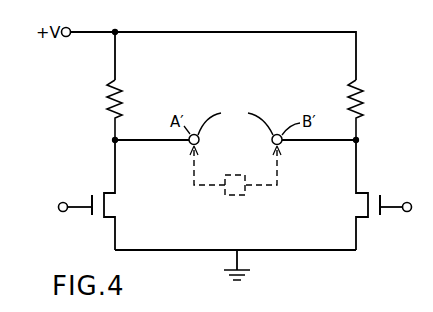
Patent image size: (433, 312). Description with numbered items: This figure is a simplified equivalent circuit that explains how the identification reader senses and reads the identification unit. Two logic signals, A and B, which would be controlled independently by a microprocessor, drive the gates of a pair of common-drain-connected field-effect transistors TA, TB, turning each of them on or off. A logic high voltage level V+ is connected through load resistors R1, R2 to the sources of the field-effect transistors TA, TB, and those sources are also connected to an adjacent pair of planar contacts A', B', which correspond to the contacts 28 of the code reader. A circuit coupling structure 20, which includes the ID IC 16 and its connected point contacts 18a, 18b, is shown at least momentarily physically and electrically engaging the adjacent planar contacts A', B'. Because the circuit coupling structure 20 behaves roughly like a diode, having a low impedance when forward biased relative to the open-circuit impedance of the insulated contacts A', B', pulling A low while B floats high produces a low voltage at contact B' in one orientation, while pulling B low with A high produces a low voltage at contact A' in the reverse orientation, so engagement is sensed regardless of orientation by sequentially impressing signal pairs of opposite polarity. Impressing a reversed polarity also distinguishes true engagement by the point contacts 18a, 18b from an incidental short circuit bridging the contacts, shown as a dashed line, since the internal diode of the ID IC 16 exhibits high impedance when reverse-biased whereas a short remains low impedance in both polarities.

The ID IC 16 is at (240, 197).
The point contact 18a is at (190, 151).
The point contact 18b is at (282, 151).
The circuit coupling structure 20 is at (209, 197).
The contacts 28 is at (235, 117).
The load resistor R1 is at (108, 110).
The load resistor R2 is at (364, 110).
The field-effect transistor TA is at (96, 194).
The field-effect transistor TB is at (377, 194).